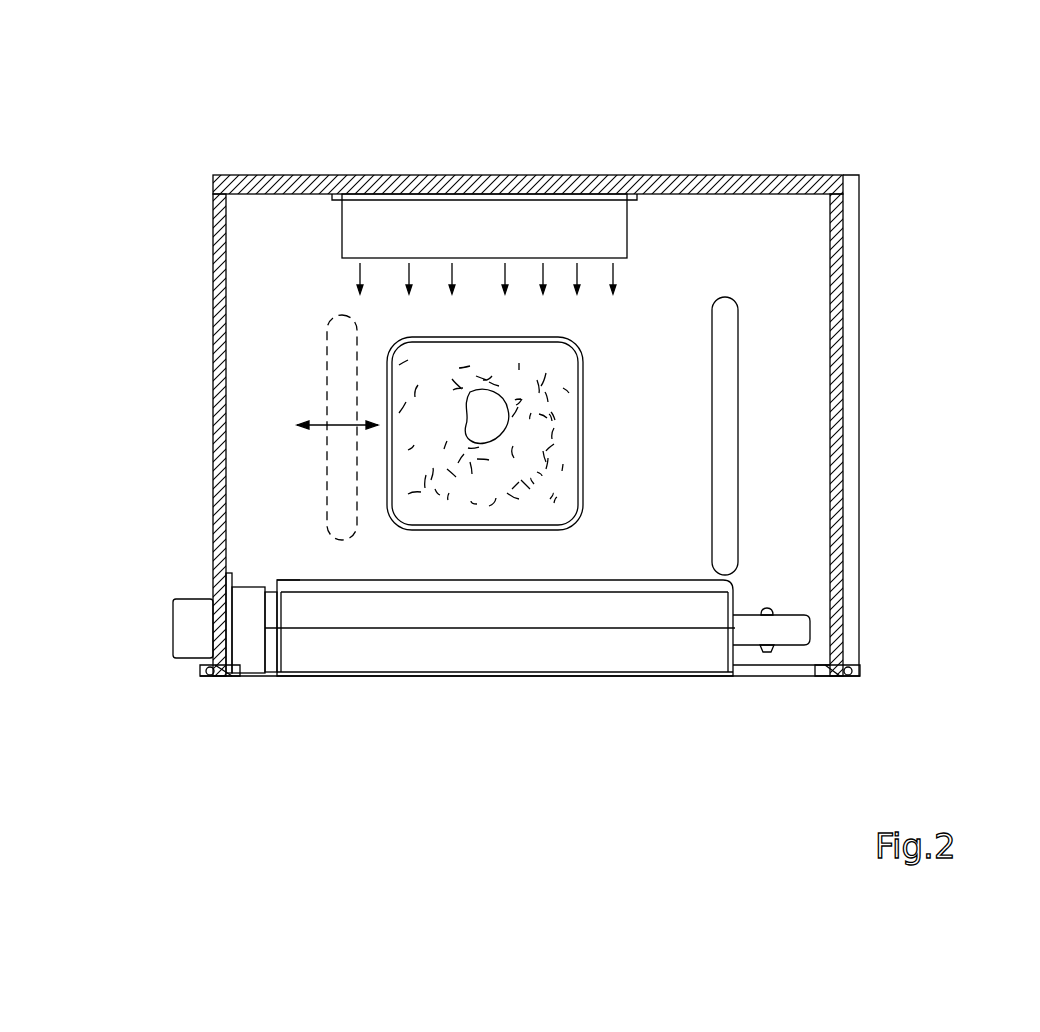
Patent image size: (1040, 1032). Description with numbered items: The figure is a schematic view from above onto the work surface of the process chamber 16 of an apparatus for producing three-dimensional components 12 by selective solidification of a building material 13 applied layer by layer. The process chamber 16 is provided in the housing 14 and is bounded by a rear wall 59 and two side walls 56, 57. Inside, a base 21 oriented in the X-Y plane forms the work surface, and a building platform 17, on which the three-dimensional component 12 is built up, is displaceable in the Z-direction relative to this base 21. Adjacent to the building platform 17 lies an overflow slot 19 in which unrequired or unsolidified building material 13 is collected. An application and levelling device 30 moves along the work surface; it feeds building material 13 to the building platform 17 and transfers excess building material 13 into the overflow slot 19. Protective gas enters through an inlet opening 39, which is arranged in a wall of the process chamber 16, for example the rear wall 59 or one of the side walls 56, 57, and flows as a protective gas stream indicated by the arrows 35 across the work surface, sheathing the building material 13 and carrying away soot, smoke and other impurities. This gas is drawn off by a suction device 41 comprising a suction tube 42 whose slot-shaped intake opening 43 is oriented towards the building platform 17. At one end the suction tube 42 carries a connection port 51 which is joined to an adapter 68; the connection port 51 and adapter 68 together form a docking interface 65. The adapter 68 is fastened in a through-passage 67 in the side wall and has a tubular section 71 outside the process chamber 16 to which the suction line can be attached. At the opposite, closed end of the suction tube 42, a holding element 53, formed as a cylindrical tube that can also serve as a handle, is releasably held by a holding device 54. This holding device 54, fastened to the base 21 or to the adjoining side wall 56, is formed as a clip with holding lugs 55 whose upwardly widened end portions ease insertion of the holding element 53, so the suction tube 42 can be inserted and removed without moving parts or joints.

The three-dimensional component 12 is at (470, 448).
The building material 13 is at (404, 512).
The housing 14 is at (857, 310).
The process chamber 16 is at (797, 280).
The building platform 17 is at (475, 470).
The overflow slot 19 is at (737, 447).
The base 21 is at (627, 547).
The application and levelling device 30 is at (330, 368).
The arrows (protective gas stream) 35 is at (624, 283).
The inlet opening 39 is at (368, 235).
The suction device 41 is at (642, 706).
The suction tube 42 is at (495, 620).
The intake opening 43 is at (278, 583).
The connection port 51 is at (268, 632).
The holding element 53 is at (800, 630).
The holding device 54 is at (795, 594).
The holding lugs 55 is at (765, 657).
The side wall 56 is at (843, 255).
The side wall 57 is at (213, 460).
The rear wall 59 is at (292, 175).
The docking interface 65 is at (235, 698).
The through-passage 67 is at (203, 588).
The adapter 68 is at (232, 683).
The tubular section 71 is at (183, 623).